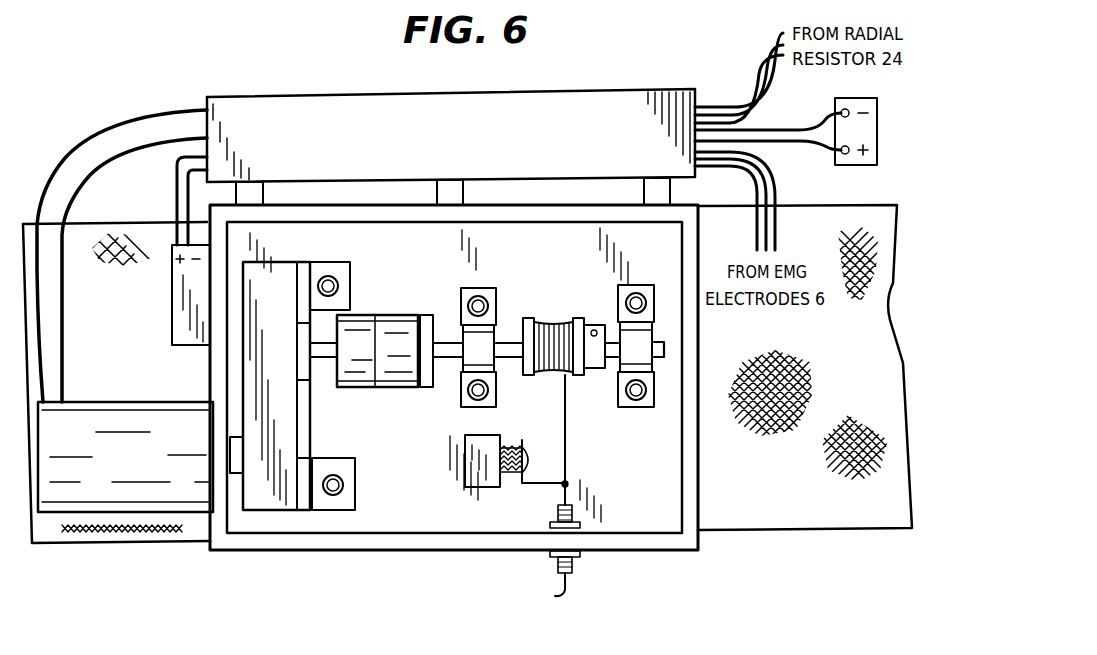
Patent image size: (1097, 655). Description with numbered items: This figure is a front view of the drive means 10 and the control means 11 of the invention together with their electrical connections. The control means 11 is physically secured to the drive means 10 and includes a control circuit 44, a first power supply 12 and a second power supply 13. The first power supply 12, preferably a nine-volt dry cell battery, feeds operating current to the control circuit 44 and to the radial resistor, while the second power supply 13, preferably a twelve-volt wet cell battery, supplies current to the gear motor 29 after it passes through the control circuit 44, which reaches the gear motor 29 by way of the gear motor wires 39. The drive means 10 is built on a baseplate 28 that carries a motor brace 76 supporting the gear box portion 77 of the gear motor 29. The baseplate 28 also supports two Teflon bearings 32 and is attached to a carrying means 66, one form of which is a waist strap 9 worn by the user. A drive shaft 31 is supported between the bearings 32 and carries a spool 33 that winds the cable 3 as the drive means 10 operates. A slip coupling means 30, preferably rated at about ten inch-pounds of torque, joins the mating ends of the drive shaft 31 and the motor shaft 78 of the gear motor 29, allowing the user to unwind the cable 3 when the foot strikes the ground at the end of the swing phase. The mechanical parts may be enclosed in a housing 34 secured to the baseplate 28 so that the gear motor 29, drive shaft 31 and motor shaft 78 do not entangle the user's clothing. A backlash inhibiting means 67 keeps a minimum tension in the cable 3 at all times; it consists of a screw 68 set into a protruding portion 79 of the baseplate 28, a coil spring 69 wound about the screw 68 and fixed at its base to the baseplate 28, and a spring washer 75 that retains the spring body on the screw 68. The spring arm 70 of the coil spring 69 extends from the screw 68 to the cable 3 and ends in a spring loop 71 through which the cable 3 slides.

The cable 3 is at (567, 578).
The waist strap 9 is at (865, 510).
The drive means 10 is at (230, 574).
The control means 11 is at (284, 58).
The first power supply 12 is at (172, 330).
The second power supply 13 is at (835, 100).
The baseplate 28 is at (441, 268).
The gear motor 29 is at (153, 402).
The slip coupling means 30 is at (400, 388).
The drive shaft 31 is at (618, 372).
The Teflon bearings 32 is at (641, 408).
The spool 33 is at (570, 318).
The housing 34 is at (693, 552).
The gear motor wires 39 is at (80, 134).
The control circuit 44 is at (598, 82).
The carrying means 66 is at (793, 558).
The backlash inhibiting means 67 is at (466, 498).
The screw 68 is at (522, 440).
The coil spring 69 is at (503, 435).
The spring arm 70 is at (547, 482).
The spring loop 71 is at (567, 483).
The spring washer 75 is at (522, 486).
The motor brace 76 is at (331, 497).
The gear box portion 77 is at (275, 493).
The motor shaft 78 is at (318, 360).
The protruding portion 79 is at (480, 490).